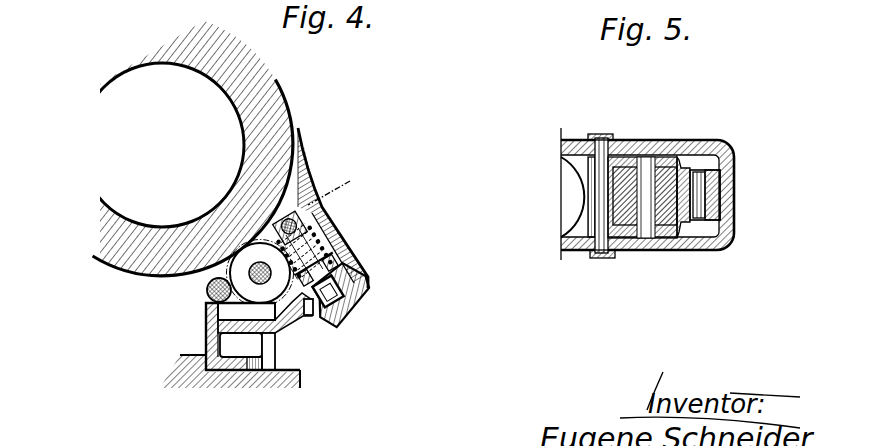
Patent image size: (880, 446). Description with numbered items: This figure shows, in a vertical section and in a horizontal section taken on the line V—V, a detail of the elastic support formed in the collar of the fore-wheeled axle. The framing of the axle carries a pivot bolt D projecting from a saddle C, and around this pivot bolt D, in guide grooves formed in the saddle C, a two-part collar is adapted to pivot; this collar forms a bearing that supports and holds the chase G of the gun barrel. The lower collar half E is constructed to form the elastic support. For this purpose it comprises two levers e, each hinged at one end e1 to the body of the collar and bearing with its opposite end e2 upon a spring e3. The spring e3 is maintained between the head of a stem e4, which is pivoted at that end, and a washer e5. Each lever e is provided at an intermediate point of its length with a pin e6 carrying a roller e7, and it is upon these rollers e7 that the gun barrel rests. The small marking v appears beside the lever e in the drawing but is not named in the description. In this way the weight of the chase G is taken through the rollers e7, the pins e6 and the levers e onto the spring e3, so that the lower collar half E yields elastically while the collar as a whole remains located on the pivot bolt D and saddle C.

In FIG. 4, the chase of the gun barrel G is at (268, 101).
In FIG. 4, the section line V— V is at (168, 317).
In FIG. 4, the pivot bolt D is at (181, 350).
In FIG. 4, the lower collar half E is at (232, 366).
In FIG. 5, the lower collar half E is at (691, 248).
In FIG. 4, the saddle C is at (264, 376).
In FIG. 4, the lever e is at (254, 280).
In FIG. 5, the lever e is at (625, 157).
In FIG. 4, the small roller mark v is at (226, 310).
In FIG. 4, the hinged end of lever e1 is at (214, 280).
In FIG. 5, the hinged end of lever e1 is at (588, 225).
In FIG. 4, the opposite end of lever e2 is at (333, 222).
In FIG. 5, the opposite end of lever e2 is at (719, 178).
In FIG. 4, the spring e3 is at (327, 244).
In FIG. 4, the stem e4 is at (303, 312).
In FIG. 5, the stem e4 is at (720, 208).
In FIG. 4, the washer e5 is at (345, 265).
In FIG. 4, the pin e6 is at (266, 286).
In FIG. 5, the pin e6 is at (642, 180).
In FIG. 4, the roller e7 is at (243, 262).
In FIG. 5, the roller e7 is at (679, 160).